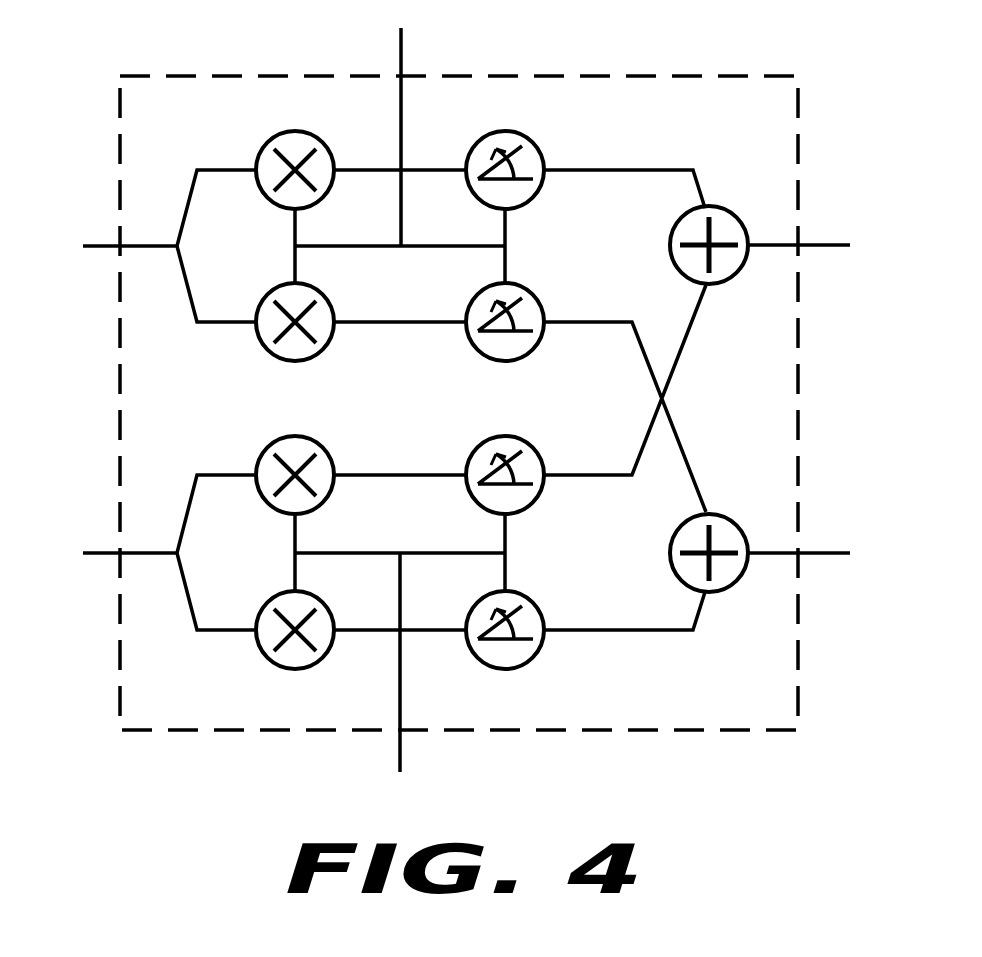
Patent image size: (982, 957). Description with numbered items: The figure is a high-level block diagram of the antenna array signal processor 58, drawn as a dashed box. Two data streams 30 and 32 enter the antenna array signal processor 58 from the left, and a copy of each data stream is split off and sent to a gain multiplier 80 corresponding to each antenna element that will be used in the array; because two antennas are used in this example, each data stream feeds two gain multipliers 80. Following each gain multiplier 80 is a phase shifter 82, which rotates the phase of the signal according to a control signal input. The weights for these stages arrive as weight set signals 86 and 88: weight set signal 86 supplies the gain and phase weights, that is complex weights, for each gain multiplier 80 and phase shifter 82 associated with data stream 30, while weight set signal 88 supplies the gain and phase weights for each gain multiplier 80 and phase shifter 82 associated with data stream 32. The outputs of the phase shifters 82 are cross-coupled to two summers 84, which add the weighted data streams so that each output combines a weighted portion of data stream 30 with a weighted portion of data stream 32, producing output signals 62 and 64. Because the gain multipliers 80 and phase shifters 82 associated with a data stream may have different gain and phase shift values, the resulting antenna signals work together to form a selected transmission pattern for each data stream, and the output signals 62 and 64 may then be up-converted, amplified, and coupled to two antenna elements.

The data stream 30 is at (99, 244).
The data stream 32 is at (99, 551).
The antenna array signal processor 58 is at (579, 76).
The output signal 62 is at (832, 245).
The output signal 64 is at (832, 553).
The gain multiplier 80 is at (269, 143).
The phase shifter 82 is at (533, 142).
The summer 84 is at (736, 217).
The weight set signal 86 is at (401, 45).
The weight set signal 88 is at (400, 765).